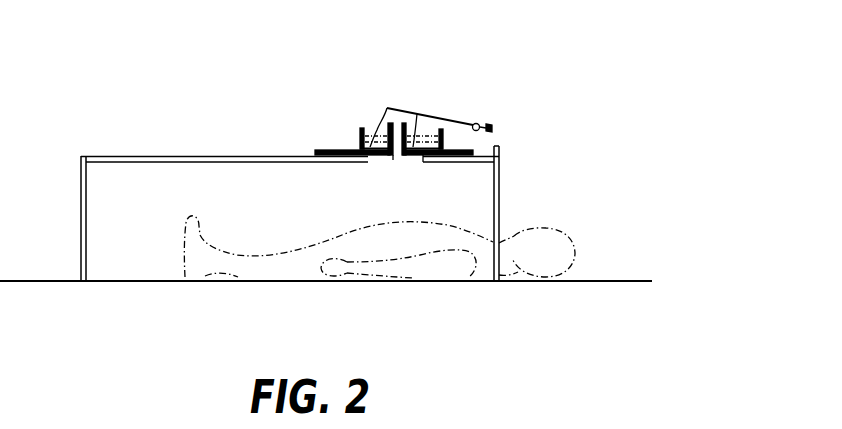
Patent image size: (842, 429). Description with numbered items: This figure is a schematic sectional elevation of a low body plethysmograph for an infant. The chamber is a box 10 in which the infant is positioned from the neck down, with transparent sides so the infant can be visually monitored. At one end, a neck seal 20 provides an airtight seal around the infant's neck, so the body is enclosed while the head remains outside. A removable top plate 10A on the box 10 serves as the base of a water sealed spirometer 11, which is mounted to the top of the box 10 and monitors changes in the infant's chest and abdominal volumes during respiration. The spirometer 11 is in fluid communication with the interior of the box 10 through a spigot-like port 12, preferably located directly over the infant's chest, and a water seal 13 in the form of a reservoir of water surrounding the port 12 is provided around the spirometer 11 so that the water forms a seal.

The box 10 is at (198, 156).
The removable top plate 10A is at (333, 149).
The spirometer 11 is at (418, 112).
The spigot-like port 12 is at (398, 158).
The water seal 13 is at (433, 159).
The neck seal 20 is at (500, 206).